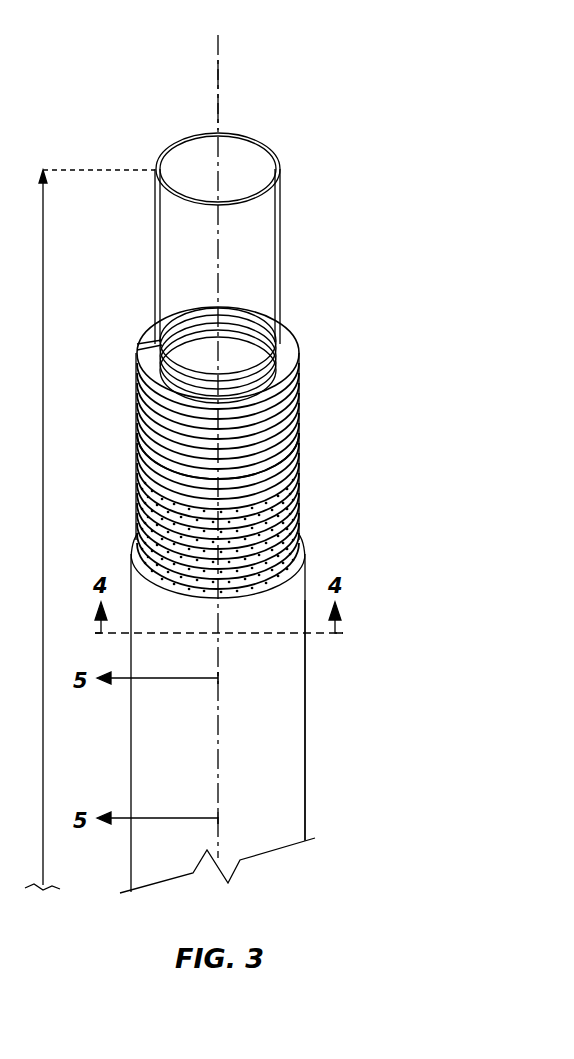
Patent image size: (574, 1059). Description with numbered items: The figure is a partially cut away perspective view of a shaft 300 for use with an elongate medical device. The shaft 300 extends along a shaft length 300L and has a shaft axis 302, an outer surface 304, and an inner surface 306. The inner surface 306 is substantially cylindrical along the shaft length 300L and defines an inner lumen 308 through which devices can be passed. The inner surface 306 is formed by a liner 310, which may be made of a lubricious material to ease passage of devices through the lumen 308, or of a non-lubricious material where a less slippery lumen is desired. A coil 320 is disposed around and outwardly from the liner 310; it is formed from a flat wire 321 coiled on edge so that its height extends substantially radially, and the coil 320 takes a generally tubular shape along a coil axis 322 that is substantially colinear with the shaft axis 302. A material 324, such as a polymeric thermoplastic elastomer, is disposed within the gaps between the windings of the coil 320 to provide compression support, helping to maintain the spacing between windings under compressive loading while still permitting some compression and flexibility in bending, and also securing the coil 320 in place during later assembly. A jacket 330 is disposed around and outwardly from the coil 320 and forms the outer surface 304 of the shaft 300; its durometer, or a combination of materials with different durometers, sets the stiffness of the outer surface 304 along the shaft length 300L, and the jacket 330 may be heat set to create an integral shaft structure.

The shaft 300 is at (163, 104).
The shaft length 300L is at (85, 530).
The shaft axis 302 is at (219, 50).
The outer surface 304 is at (307, 722).
The inner surface 306 is at (262, 164).
The inner lumen 308 is at (183, 165).
The liner 310 is at (282, 240).
The coil 320 is at (300, 390).
The flat wire 321 is at (282, 424).
The coil axis 322 is at (219, 100).
The material 324 is at (280, 503).
The jacket 330 is at (291, 762).